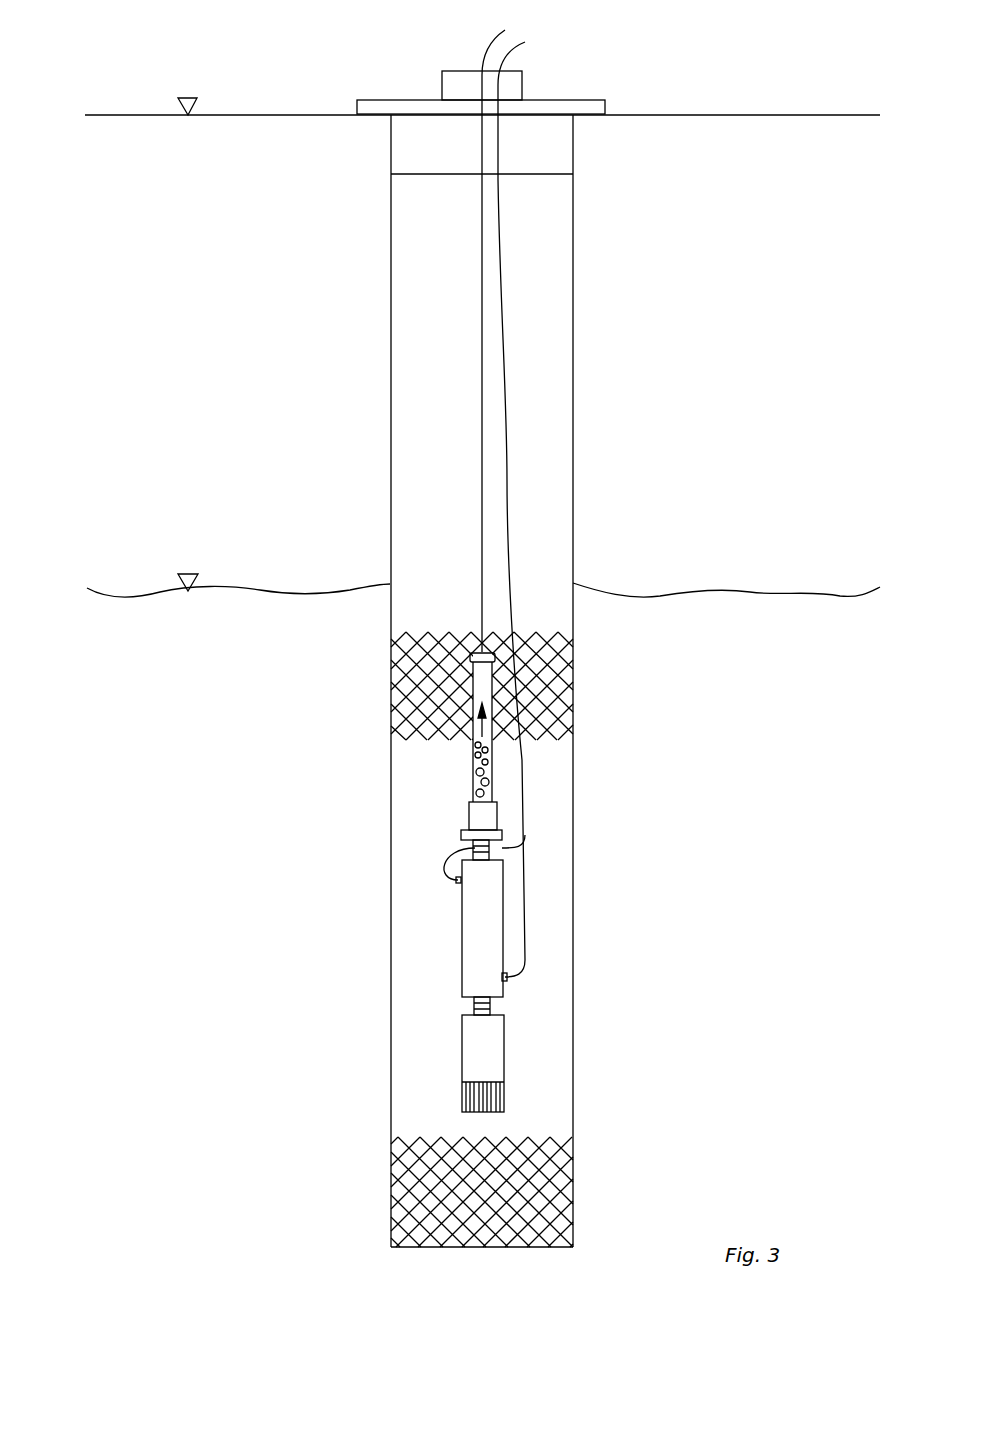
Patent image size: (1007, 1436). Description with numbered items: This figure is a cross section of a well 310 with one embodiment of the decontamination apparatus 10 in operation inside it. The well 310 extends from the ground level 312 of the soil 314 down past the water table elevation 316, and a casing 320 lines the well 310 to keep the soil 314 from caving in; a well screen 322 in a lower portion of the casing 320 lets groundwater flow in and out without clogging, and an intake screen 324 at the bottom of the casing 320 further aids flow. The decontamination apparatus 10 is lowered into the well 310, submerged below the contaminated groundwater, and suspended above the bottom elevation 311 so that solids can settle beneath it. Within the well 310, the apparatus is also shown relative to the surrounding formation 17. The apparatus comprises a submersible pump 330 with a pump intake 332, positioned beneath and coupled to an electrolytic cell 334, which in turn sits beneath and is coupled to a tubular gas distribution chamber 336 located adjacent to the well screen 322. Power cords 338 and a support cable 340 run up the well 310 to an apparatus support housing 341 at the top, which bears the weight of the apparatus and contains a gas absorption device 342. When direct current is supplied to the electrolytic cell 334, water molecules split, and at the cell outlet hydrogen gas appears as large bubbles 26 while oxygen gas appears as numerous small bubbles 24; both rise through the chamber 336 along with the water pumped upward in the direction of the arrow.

The decontamination apparatus 10 is at (355, 564).
The aquifer formation 17 is at (218, 953).
The small bubbles 24 is at (473, 757).
The large bubbles 26 is at (473, 793).
The well 310 is at (455, 652).
The bottom elevation 311 is at (418, 1258).
The ground level 312 is at (278, 115).
The soil 314 is at (742, 328).
The water table elevation 316 is at (252, 592).
The casing 320 is at (390, 420).
The well screen 322 is at (555, 687).
The intake screen 324 is at (557, 1185).
The submersible pump 330 is at (504, 1048).
The pump intake 332 is at (504, 1095).
The electrolytic cell 334 is at (503, 928).
The gas distribution chamber 336 is at (493, 772).
The power cords 338 is at (507, 443).
The support cable 340 is at (482, 512).
The apparatus support housing 341 is at (560, 100).
The gas absorption device 342 is at (553, 145).